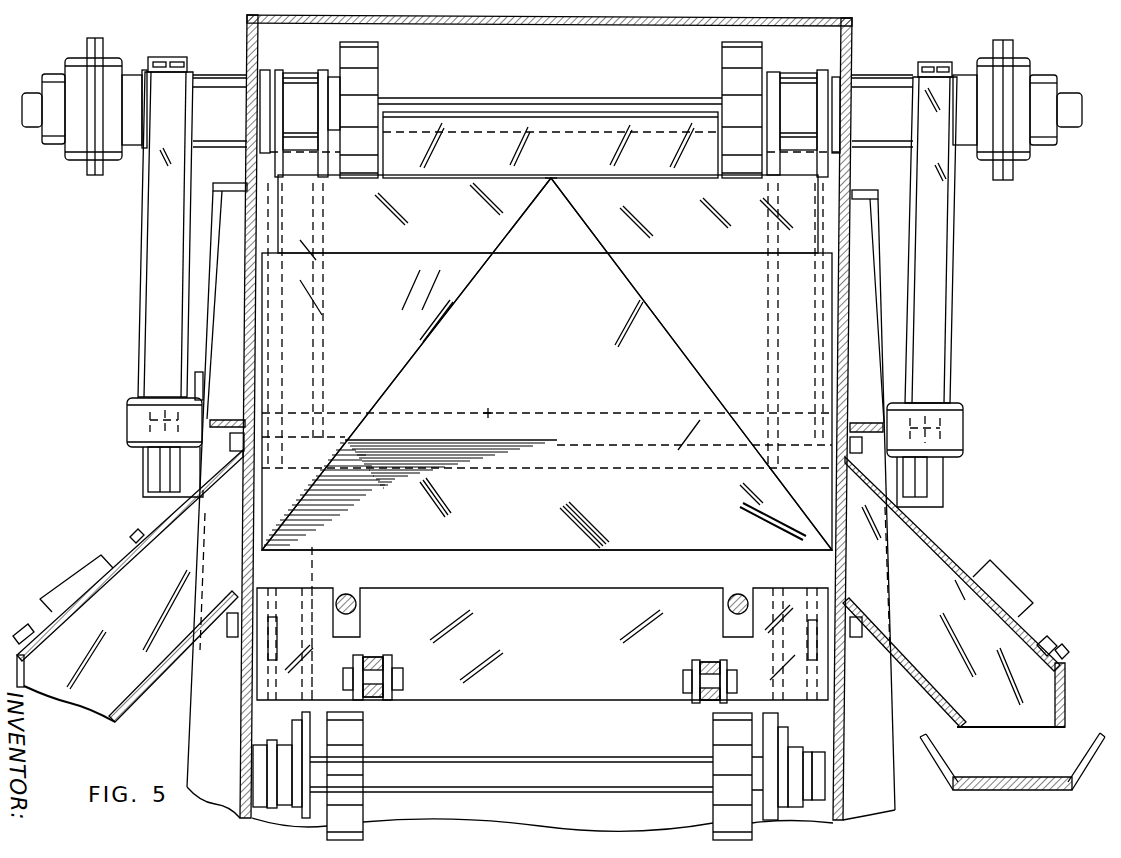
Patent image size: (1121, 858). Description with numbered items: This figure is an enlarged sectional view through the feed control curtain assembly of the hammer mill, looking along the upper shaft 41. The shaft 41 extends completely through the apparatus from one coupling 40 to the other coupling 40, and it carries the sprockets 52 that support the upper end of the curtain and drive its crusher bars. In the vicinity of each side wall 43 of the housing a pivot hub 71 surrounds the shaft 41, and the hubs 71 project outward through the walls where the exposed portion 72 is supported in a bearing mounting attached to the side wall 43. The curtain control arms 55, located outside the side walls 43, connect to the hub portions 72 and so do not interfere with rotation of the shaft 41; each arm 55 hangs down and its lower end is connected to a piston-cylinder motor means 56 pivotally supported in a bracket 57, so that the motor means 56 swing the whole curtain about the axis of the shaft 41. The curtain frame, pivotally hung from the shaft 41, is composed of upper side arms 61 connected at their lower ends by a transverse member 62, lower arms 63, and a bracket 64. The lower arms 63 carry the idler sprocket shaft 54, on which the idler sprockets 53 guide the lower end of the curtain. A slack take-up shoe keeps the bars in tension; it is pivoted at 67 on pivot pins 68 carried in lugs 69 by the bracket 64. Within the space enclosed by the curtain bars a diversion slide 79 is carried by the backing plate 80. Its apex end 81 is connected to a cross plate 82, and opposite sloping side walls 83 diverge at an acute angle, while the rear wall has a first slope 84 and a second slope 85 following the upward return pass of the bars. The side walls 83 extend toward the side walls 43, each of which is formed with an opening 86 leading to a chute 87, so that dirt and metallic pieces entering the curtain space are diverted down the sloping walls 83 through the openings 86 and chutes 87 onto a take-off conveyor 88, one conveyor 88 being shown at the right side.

The coupling 40 is at (78, 57).
The shaft 41 is at (592, 100).
The side wall 43 is at (246, 170).
The sprocket 52 is at (383, 80).
The idler sprocket 53 is at (363, 740).
The shaft 54 is at (530, 762).
The arm 55 is at (146, 258).
The piston-cylinder motor means 56 is at (160, 470).
The bracket 57 is at (140, 480).
The upper side arm 61 is at (328, 332).
The transverse member 62 is at (490, 412).
The lower arm 63 is at (318, 590).
The bracket 64 is at (546, 622).
The shoe pivot 67 is at (370, 656).
The pivot pin 68 is at (403, 679).
The lug 69 is at (397, 658).
The pivot hub 71 is at (293, 77).
The exposed hub portion 72 is at (214, 77).
The diversion slide 79 is at (600, 345).
The backing plate 80 is at (427, 262).
The apex end 81 is at (553, 178).
The cross plate 82 is at (690, 236).
The sloping side wall 83 is at (426, 338).
The first slope 84 is at (687, 398).
The second slope 85 is at (760, 503).
The opening 86 is at (247, 592).
The chute 87 is at (165, 676).
The take-off conveyor 88 is at (1017, 792).